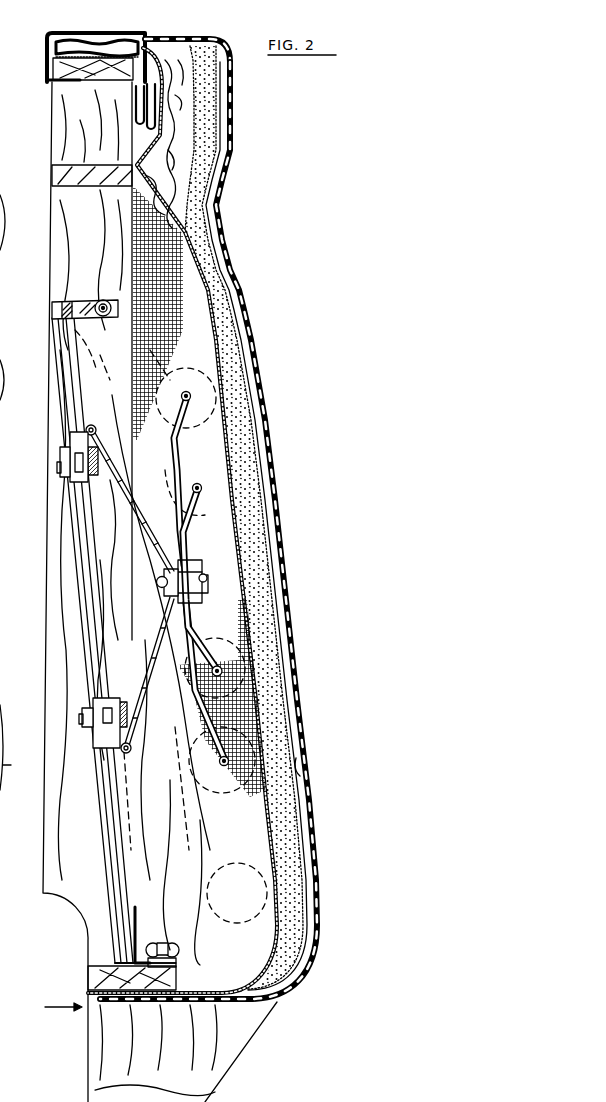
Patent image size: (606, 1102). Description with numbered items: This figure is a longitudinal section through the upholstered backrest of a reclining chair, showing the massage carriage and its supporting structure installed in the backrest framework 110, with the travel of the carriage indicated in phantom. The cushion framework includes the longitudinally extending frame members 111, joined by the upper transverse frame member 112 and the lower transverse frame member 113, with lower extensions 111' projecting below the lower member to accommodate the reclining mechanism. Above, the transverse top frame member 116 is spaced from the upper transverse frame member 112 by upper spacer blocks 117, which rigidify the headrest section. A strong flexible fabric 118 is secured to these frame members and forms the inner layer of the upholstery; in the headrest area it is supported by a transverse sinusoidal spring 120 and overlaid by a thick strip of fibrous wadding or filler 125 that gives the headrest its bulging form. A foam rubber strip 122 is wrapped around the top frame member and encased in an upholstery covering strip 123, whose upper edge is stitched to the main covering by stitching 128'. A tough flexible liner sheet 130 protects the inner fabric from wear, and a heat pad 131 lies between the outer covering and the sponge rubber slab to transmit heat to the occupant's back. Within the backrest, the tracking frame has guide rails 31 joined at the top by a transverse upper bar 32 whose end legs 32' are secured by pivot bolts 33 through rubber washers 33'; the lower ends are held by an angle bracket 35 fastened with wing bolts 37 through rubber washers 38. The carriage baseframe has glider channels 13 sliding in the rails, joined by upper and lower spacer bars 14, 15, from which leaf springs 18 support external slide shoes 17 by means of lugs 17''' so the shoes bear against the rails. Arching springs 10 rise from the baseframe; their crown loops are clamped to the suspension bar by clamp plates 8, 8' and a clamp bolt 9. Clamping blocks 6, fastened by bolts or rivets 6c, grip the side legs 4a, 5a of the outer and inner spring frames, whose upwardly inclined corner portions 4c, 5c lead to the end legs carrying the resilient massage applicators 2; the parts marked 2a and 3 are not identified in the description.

The resilient massage applicators 2 is at (222, 336).
The casing portion 2a is at (10, 908).
The casing part 3 is at (12, 767).
The side leg of outer spring frame 4a is at (183, 447).
The upwardly inclined corner portions 4c is at (188, 404).
The side leg of inner spring frame 5a is at (190, 540).
The upwardly inclined corner portions 5c is at (200, 500).
The clamping blocks 6 is at (196, 560).
The bolts or rivets 6c is at (205, 576).
The lower clamp plate 8 is at (160, 571).
The upper clamp plate 8' is at (214, 587).
The clamp bolt 9 is at (158, 582).
The arching springs 10 is at (158, 804).
The glider channels 13 is at (85, 503).
The upper spacer bar 14 is at (95, 476).
The lower spacer bar 15 is at (122, 700).
The external slide shoes 17 is at (68, 590).
The lug 17''' is at (50, 601).
The leaf spring 18 is at (60, 458).
The guide rails 31 is at (60, 326).
The transverse upper bar 32 is at (71, 329).
The end legs 32' is at (55, 303).
The pivot bolts 33 is at (66, 295).
The rubber washers 33' is at (64, 283).
The angle bracket 35 is at (139, 932).
The wing bolts 37 is at (174, 945).
The rubber washers 38 is at (177, 962).
The backrest framework 110 is at (42, 1019).
The longitudinally extending frame members 111 is at (106, 592).
The lower extensions 111' is at (159, 1052).
The upper transverse frame member 112 is at (62, 168).
The lower transverse frame member 113 is at (92, 979).
The transverse top frame member 116 is at (54, 70).
The upper spacer blocks 117 is at (62, 106).
The flexible fabric 118 is at (188, 164).
The sinusoidal spring 120 is at (153, 107).
The foam rubber strip 122 is at (55, 50).
The upholstery covering strip 123 is at (50, 34).
The fibrous wadding or filler 125 is at (183, 132).
The stitching 128' is at (187, 40).
The flexible liner sheet 130 is at (205, 340).
The heat pad 131 is at (302, 770).